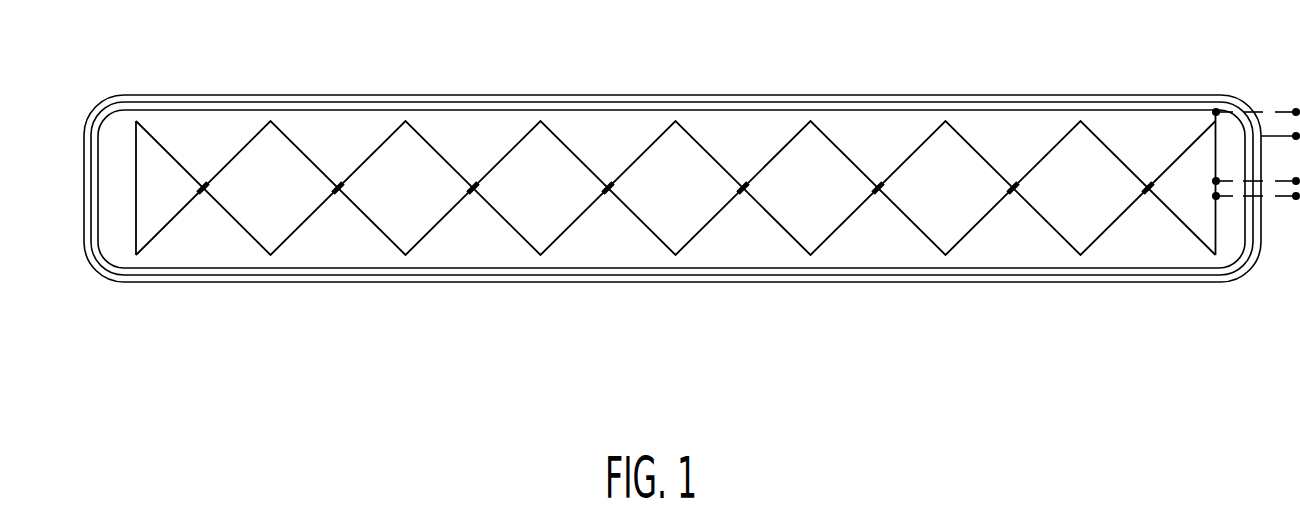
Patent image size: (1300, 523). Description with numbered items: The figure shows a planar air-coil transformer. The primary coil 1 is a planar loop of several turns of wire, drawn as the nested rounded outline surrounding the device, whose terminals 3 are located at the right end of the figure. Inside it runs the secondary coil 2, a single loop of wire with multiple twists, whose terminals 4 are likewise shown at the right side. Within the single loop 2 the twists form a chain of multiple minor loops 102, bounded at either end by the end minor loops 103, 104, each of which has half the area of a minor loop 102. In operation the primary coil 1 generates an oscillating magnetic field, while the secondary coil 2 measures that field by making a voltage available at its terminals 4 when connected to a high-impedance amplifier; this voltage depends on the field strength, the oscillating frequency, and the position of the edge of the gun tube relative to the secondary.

The primary coil 1 is at (283, 77).
The secondary coil 2 is at (503, 233).
The terminals of primary coil 3 is at (1283, 100).
The terminals of secondary coil 4 is at (1290, 222).
The minor loops 102 is at (282, 223).
The end minor loop 103 is at (157, 218).
The end minor loop 104 is at (1195, 220).